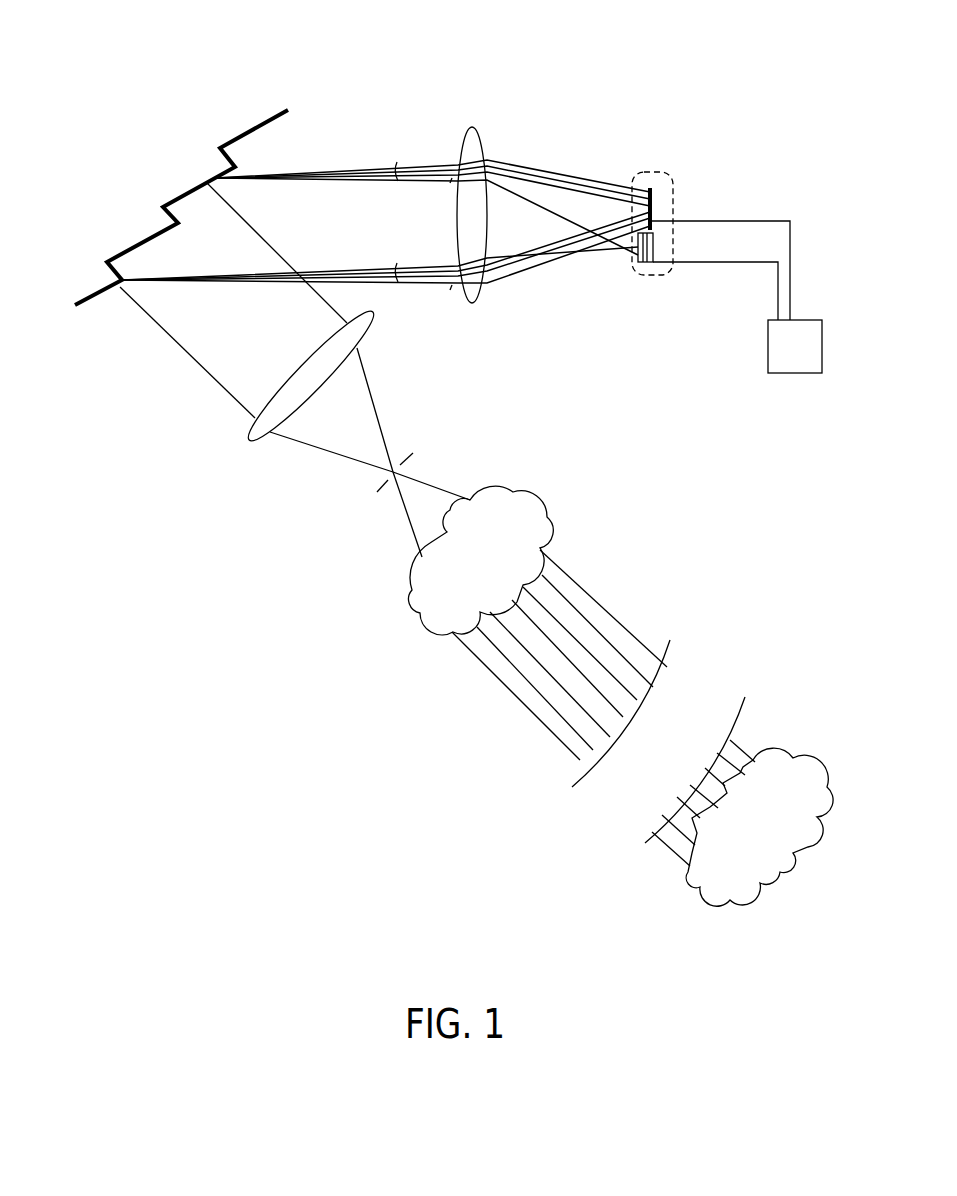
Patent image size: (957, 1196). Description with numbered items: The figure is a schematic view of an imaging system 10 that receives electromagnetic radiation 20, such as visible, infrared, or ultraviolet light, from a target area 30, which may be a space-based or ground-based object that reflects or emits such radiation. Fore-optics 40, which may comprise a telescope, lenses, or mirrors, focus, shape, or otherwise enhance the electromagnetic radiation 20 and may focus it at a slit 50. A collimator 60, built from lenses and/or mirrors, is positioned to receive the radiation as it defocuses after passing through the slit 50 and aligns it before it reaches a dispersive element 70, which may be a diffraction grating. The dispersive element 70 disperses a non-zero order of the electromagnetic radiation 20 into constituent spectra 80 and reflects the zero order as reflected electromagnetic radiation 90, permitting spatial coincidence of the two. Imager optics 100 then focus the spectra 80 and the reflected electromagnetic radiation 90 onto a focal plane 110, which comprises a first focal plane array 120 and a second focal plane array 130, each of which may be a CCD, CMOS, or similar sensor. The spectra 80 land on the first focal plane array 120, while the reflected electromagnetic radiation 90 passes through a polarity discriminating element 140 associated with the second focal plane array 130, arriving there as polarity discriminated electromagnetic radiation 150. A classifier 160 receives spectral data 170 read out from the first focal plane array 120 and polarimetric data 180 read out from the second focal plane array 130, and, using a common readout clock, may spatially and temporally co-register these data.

The imaging system 10 is at (633, 54).
The electromagnetic radiation 20 is at (482, 672).
The target area 30 is at (805, 762).
The fore-optics 40 is at (418, 610).
The slit 50 is at (392, 493).
The collimator 60 is at (247, 441).
The dispersive element 70 is at (243, 130).
The constituent spectra 80 is at (408, 157).
The reflected electromagnetic radiation 90 is at (450, 183).
The imager optics 100 is at (472, 127).
The focal plane 110 is at (664, 166).
The first focal plane array 120 is at (652, 200).
The second focal plane array 130 is at (654, 247).
The polarity discriminating element 140 is at (642, 264).
The polarity discriminated electromagnetic radiation 150 is at (649, 264).
The classifier 160 is at (798, 363).
The spectral data 170 is at (772, 220).
The polarimetric data 180 is at (755, 264).